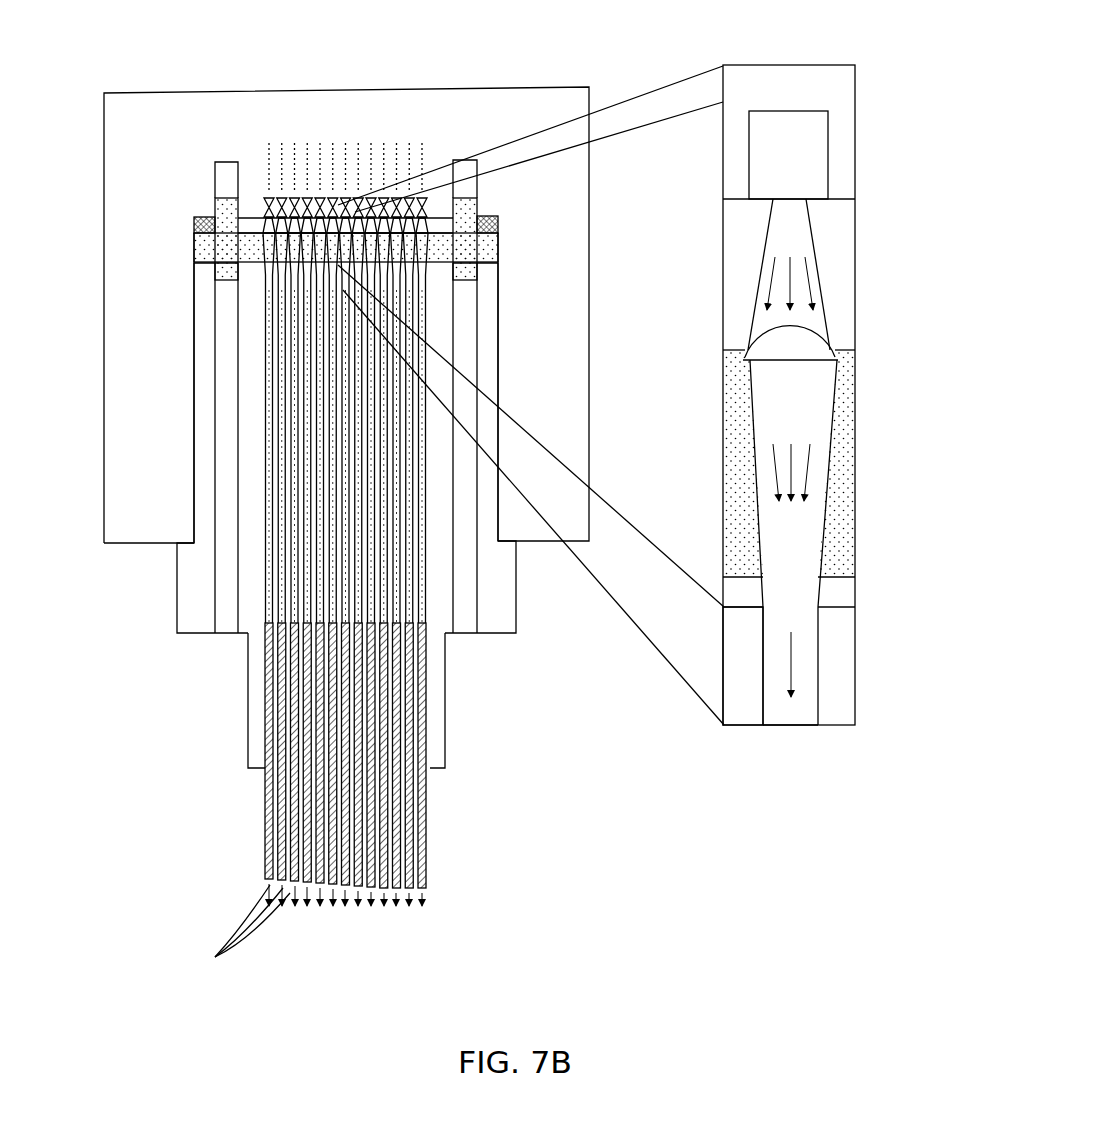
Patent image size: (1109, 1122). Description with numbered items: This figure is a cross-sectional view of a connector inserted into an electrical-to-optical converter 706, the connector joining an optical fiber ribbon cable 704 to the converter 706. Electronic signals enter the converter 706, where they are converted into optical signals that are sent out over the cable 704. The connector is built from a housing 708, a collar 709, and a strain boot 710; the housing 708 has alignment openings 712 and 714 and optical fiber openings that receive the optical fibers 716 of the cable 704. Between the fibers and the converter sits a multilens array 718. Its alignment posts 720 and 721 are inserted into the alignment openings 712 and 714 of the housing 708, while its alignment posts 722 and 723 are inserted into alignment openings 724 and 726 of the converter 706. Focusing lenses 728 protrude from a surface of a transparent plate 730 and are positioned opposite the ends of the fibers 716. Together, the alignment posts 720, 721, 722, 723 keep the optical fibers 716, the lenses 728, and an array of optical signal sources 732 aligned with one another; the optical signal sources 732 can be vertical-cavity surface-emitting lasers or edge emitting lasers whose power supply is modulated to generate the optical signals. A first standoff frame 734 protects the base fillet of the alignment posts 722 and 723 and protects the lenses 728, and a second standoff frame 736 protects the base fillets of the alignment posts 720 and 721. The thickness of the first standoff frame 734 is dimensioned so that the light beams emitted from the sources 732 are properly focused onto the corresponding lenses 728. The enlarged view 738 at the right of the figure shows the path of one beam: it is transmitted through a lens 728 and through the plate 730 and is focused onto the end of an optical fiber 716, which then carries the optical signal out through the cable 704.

The optical fiber ribbon cable 704 is at (445, 852).
The EO converter 706 is at (143, 124).
The housing 708 is at (205, 507).
The collar 709 is at (188, 602).
The strain boot 710 is at (442, 737).
The alignment opening 712 is at (230, 635).
The alignment opening 714 is at (465, 634).
The optical fibers 716 is at (789, 716).
The multilens array 718 is at (560, 237).
The alignment post 720 is at (228, 280).
The alignment post 721 is at (475, 283).
The alignment post 722 is at (217, 207).
The alignment post 723 is at (470, 212).
The alignment opening 724 is at (227, 171).
The alignment opening 726 is at (463, 168).
The focusing lenses 728 is at (273, 203).
The transparent plate 730 is at (492, 250).
The optical signal sources 732 is at (412, 205).
The first standoff frame 734 is at (195, 227).
The second standoff frame 736 is at (195, 263).
The enlarged view 738 is at (793, 62).